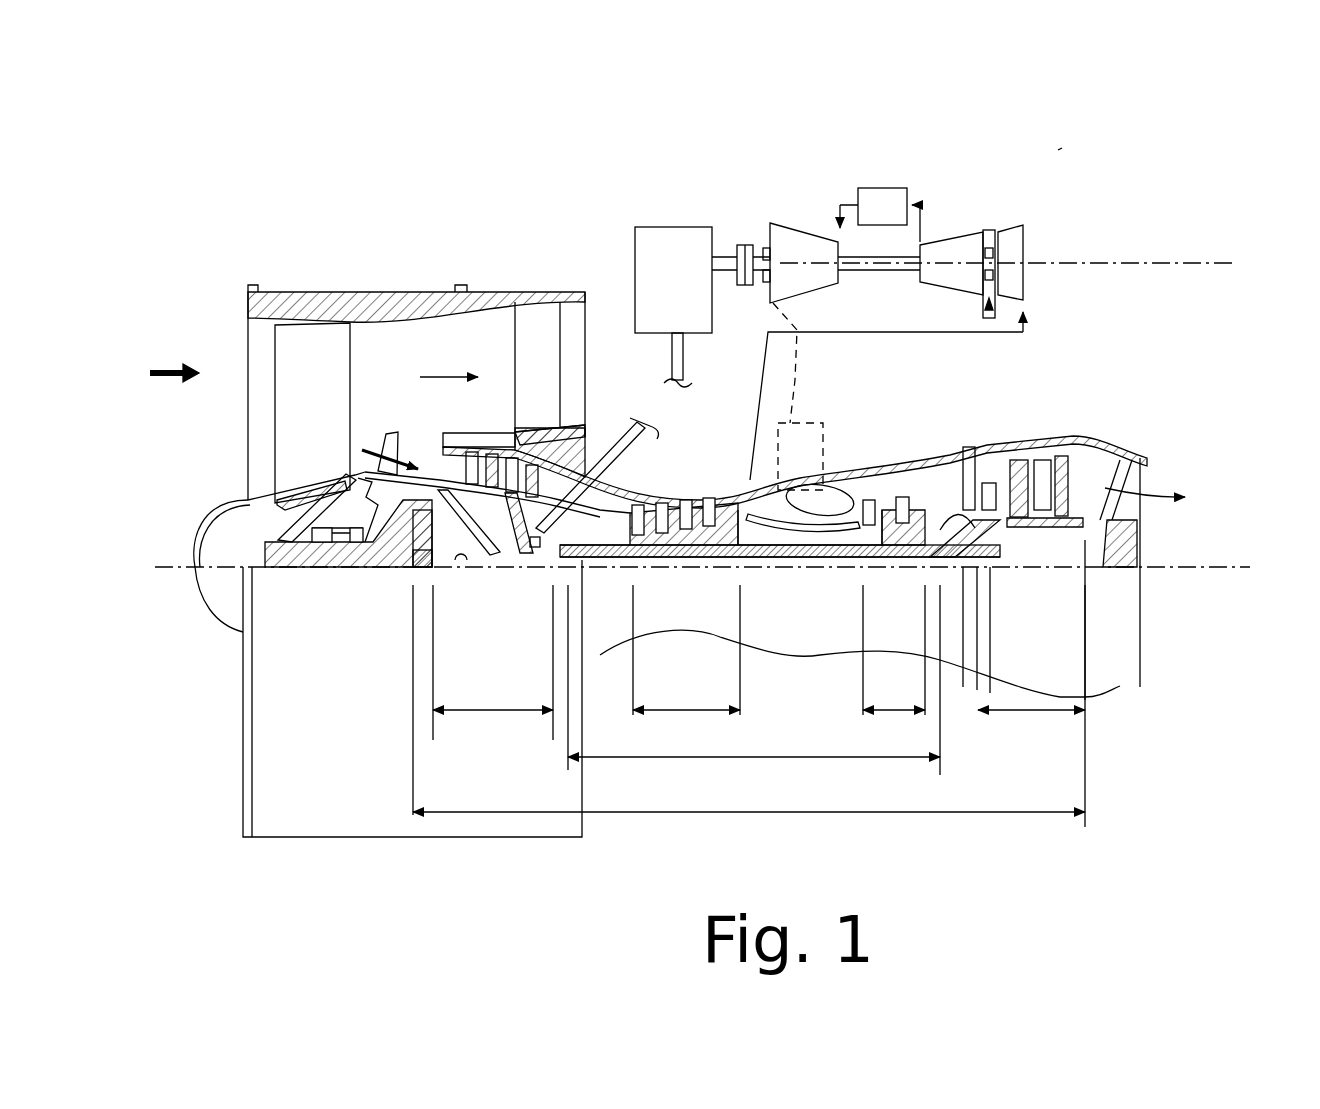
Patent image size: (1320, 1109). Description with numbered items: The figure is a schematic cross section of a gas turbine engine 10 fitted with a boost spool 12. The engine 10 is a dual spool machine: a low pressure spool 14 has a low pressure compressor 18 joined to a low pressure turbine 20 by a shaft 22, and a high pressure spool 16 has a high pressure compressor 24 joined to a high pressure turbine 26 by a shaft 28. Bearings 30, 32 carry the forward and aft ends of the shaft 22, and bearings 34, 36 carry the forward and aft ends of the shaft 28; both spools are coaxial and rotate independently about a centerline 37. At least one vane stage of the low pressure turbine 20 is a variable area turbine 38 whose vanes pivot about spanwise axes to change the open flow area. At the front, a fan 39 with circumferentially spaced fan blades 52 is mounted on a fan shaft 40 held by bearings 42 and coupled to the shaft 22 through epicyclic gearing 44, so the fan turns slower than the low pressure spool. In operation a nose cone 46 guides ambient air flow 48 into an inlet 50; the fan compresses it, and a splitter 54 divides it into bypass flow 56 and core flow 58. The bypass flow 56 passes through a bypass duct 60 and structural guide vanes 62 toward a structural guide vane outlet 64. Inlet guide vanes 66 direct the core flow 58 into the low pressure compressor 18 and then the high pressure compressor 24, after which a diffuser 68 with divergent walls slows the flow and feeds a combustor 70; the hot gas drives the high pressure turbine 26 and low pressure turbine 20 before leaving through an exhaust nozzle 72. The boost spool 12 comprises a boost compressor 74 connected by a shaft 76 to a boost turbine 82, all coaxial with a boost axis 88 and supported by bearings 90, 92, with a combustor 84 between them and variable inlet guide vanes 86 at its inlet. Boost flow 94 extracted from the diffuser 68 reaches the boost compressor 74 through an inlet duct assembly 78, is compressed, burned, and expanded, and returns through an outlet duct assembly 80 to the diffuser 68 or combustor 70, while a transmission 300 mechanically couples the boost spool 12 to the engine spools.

The gas turbine engine 10 is at (318, 845).
The boost spool 12 is at (1058, 150).
The low pressure spool 14 is at (749, 716).
The high pressure spool 16 is at (754, 686).
The low pressure compressor 18 is at (493, 664).
The low pressure turbine 20 is at (1031, 706).
The shaft 22 is at (455, 558).
The high pressure compressor 24 is at (686, 665).
The high pressure turbine 26 is at (780, 644).
The shaft 28 is at (800, 547).
The bearing 30 is at (496, 560).
The bearing 32 is at (985, 527).
The bearing 34 is at (600, 570).
The bearing 36 is at (935, 565).
The centerline 37 is at (1212, 567).
The variable area turbine 38 is at (1038, 458).
The fan 39 is at (275, 344).
The fan shaft 40 is at (258, 545).
The bearings 42 is at (356, 548).
The gearing 44 is at (390, 590).
The nose cone 46 is at (196, 553).
The ambient air flow 48 is at (160, 370).
The inlet 50 is at (247, 421).
The fan blades 52 is at (300, 376).
The splitter 54 is at (390, 436).
The bypass flow 56 is at (440, 376).
The core flow 58 is at (402, 440).
The bypass duct 60 is at (365, 362).
The structural guide vanes 62 is at (525, 362).
The structural guide vane outlet 64 is at (590, 300).
The inlet guide vanes 66 is at (382, 465).
The diffuser 68 is at (738, 476).
The combustor 70 is at (830, 490).
The exhaust nozzle 72 is at (1150, 458).
The boost compressor 74 is at (955, 232).
The shaft 76 is at (892, 272).
The inlet duct assembly 78 is at (918, 332).
The outlet duct assembly 80 is at (800, 340).
The boost turbine 82 is at (800, 222).
The combustor 84 is at (880, 188).
The variable inlet guide vanes 86 is at (1023, 235).
The boost axis 88 is at (1185, 263).
The bearing 90 is at (763, 240).
The bearing 92 is at (988, 230).
The boost flow 94 is at (754, 340).
The transmission 300 is at (656, 178).